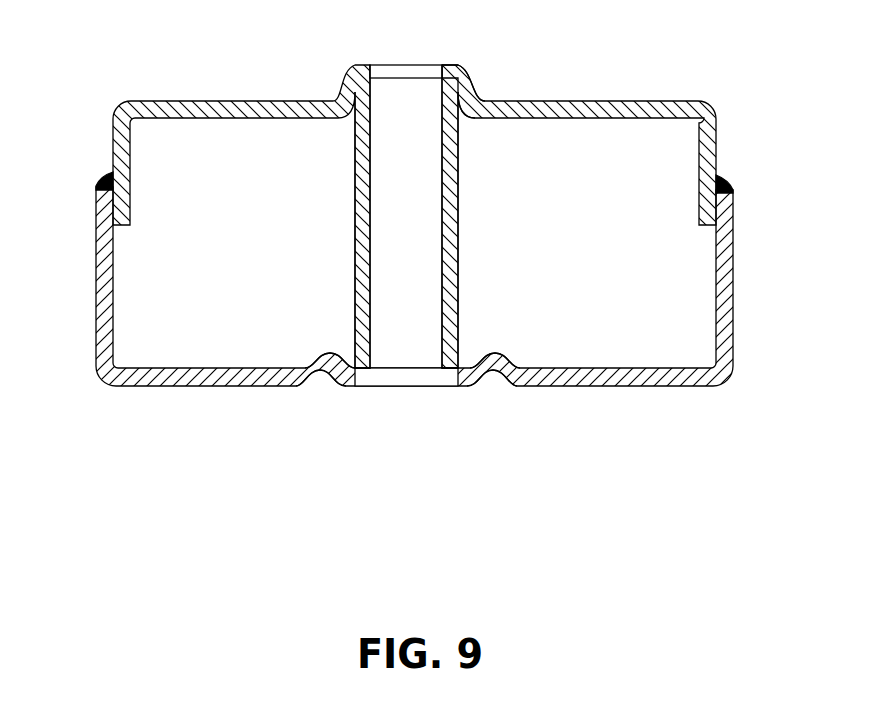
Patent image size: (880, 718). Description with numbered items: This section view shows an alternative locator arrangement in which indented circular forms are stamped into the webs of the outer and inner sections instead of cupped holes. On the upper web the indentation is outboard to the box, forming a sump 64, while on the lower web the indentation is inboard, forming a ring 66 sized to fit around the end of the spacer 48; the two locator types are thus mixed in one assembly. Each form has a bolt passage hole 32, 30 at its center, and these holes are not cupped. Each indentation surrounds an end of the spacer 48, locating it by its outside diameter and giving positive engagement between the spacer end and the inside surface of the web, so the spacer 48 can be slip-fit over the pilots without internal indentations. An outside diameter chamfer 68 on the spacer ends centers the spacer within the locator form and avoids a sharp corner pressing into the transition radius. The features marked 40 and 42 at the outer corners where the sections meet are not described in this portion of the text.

The bolt passage hole 30 is at (413, 370).
The bolt passage hole 32 is at (401, 66).
The weld joint 40 is at (741, 172).
The weld joint 42 is at (98, 170).
The spacer 48 is at (459, 172).
The sump 64 is at (474, 60).
The formed ring 66 is at (471, 391).
The outside diameter chamfer 68 is at (447, 86).